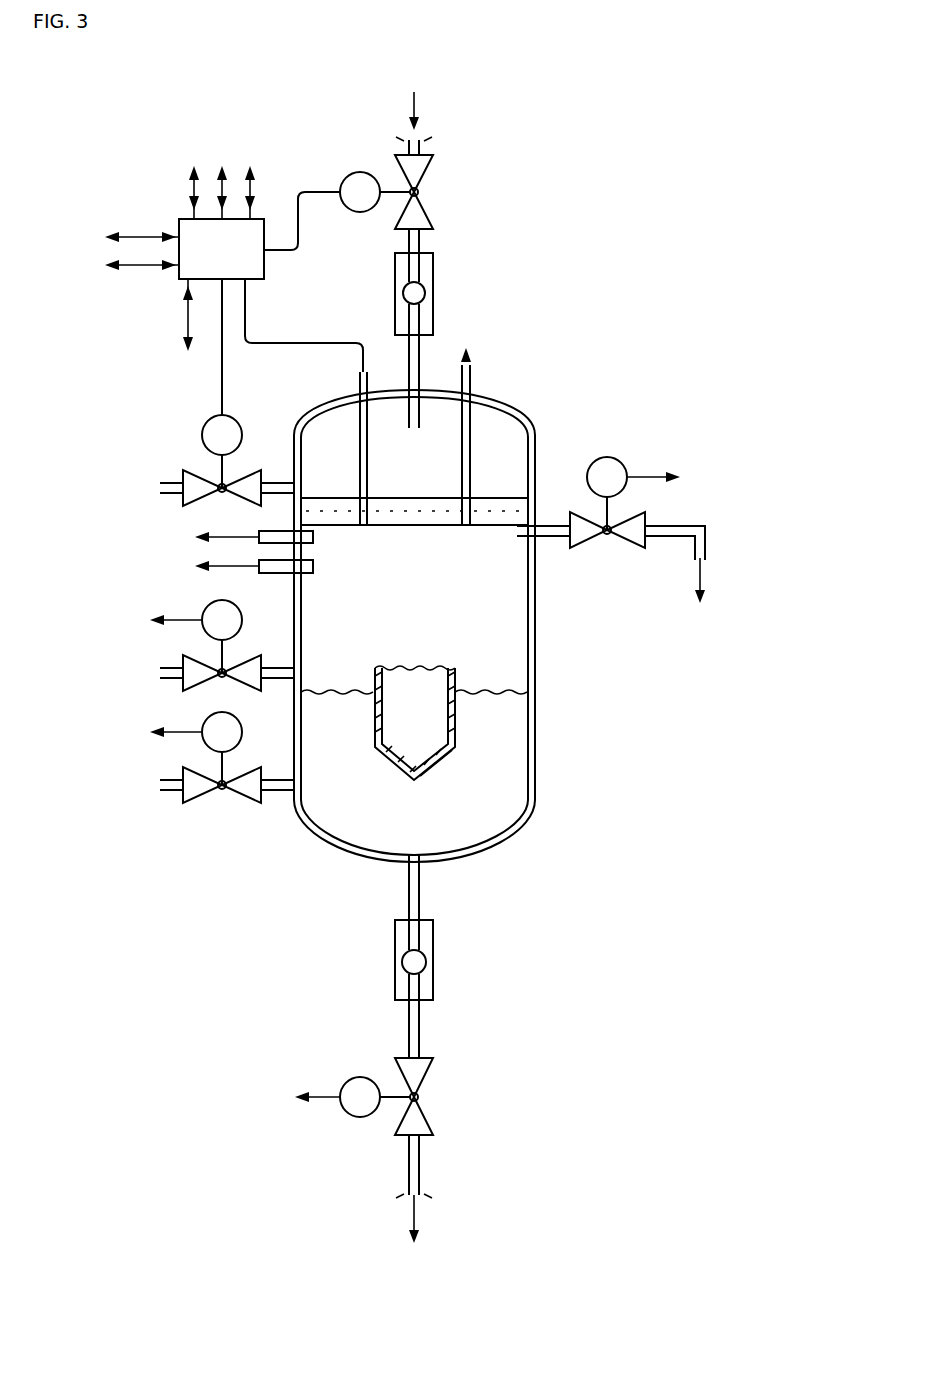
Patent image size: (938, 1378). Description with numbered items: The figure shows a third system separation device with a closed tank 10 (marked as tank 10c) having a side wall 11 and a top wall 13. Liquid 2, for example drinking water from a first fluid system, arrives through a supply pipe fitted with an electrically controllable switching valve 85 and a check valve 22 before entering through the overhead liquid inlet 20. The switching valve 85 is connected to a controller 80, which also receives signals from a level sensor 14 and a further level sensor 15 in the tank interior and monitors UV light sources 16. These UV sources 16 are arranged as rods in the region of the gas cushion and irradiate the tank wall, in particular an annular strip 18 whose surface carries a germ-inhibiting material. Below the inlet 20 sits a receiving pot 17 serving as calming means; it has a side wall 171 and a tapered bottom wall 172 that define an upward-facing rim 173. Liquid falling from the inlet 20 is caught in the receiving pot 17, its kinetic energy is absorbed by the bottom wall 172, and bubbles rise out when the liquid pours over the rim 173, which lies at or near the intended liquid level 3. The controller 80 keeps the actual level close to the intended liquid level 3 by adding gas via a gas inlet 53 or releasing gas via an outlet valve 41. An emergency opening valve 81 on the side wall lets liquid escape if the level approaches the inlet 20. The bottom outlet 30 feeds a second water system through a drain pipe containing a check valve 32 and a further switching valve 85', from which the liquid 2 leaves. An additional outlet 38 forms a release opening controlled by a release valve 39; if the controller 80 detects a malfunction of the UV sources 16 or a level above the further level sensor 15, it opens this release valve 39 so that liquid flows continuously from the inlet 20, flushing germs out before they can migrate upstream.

The liquid 2 is at (416, 100).
The intended liquid level 3 is at (340, 692).
The tank 10 is at (548, 818).
The tank variant 10c is at (397, 589).
The side wall 11 is at (536, 603).
The top wall 13 is at (440, 398).
The level sensor 14 is at (313, 566).
The further level sensor 15 is at (313, 537).
The UV light source 16 is at (460, 448).
The receiving pot 17 is at (456, 733).
The annular strip 18 is at (497, 508).
The liquid inlet 20 is at (407, 402).
The check valve 22 is at (434, 293).
The outlet 30 is at (420, 868).
The check valve 32 is at (434, 960).
The additional outlet 38 is at (292, 793).
The release valve 39 is at (245, 797).
The outlet valve 41 is at (185, 475).
The gas inlet 53 is at (283, 680).
The controller 80 is at (472, 380).
The emergency opening valve 81 is at (607, 548).
The switching valve 85 is at (411, 192).
The switching valve 85' is at (364, 634).
The side wall 171 is at (456, 708).
The bottom wall 172 is at (432, 766).
The rim 173 is at (455, 668).